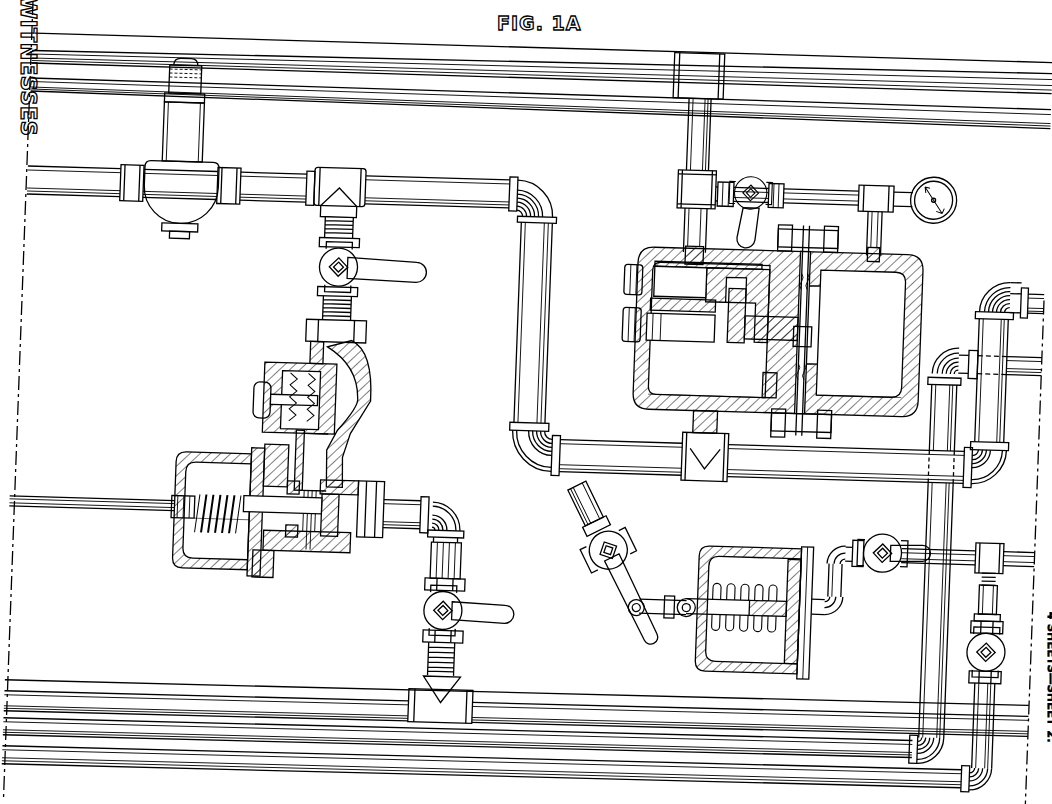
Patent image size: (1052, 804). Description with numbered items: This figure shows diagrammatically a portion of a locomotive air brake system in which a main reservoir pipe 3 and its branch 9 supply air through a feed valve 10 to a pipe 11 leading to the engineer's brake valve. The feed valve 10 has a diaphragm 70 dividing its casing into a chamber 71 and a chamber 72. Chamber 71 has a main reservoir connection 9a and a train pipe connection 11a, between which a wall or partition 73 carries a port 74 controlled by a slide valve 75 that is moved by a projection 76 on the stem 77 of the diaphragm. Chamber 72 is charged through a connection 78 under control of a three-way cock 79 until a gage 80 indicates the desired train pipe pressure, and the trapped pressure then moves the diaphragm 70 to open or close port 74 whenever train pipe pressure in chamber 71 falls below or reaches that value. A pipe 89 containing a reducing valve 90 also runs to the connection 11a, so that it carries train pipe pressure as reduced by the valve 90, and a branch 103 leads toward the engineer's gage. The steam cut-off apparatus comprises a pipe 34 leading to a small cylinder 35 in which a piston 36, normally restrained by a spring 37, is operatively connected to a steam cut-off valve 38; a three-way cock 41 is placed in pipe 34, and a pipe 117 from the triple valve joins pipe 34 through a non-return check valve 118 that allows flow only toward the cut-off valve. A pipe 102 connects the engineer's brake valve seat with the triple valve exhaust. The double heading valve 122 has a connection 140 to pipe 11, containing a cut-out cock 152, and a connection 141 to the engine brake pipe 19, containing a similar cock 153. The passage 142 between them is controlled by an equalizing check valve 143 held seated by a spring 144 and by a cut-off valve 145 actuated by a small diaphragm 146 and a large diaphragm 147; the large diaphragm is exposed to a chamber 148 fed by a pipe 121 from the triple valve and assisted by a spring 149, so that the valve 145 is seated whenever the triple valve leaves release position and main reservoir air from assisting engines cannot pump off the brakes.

The main reservoir pipe 3 is at (384, 42).
The branch 9 is at (715, 130).
The main reservoir connection 9a is at (714, 219).
The feed valve 10 is at (678, 232).
The pipe 11 is at (896, 432).
The train pipe connection 11a is at (712, 393).
The engine brake pipe 19 is at (260, 690).
The steam cut-off valve pipe 34 is at (1038, 522).
The small cylinder 35 is at (804, 525).
The piston 36 is at (823, 611).
The spring 37 is at (736, 597).
The steam cut-off valve 38 is at (650, 527).
The three-way cock 41 is at (905, 509).
The diaphragm 70 is at (820, 338).
The chamber 71 is at (707, 380).
The chamber 72 is at (860, 358).
The wall or partition 73 is at (757, 316).
The port 74 is at (722, 290).
The slide valve 75 is at (718, 264).
The projection 76 is at (734, 304).
The stem 77 is at (792, 318).
The connection 78 is at (826, 169).
The three-way cock 79 is at (768, 160).
The gage 80 is at (958, 165).
The pipe 89 is at (566, 243).
The reducing valve 90 is at (181, 148).
The pipe 102 is at (507, 716).
The branch 103 is at (540, 112).
The pipe 117 is at (583, 749).
The non-return check valve 118 is at (1027, 616).
The pipe 121 is at (90, 497).
The double heading valve 122 is at (216, 446).
The connection 140 is at (368, 216).
The connection 141 is at (479, 512).
The passage 142 is at (313, 460).
The equalizing check valve 143 is at (380, 392).
The spring 144 is at (316, 354).
The cut-off valve 145 is at (370, 476).
The small diaphragm 146 is at (325, 542).
The large diaphragm 147 is at (268, 556).
The chamber 148 is at (219, 495).
The spring 149 is at (218, 538).
The cut-out cock 152 is at (328, 258).
The cut-out cock 153 is at (444, 598).